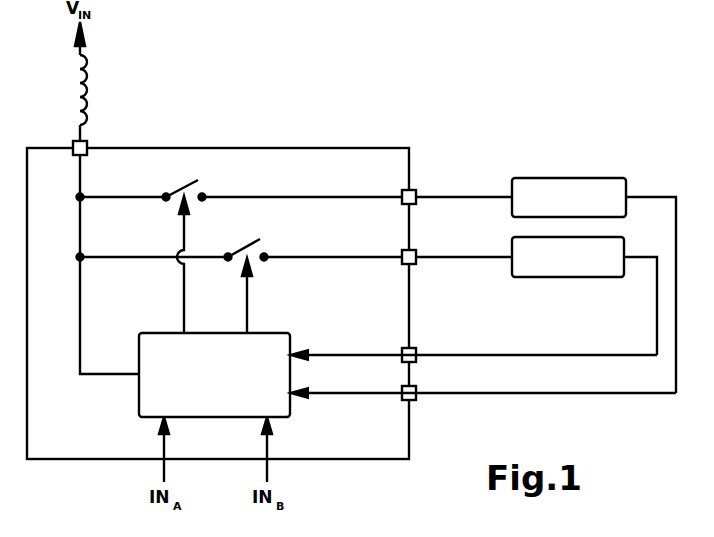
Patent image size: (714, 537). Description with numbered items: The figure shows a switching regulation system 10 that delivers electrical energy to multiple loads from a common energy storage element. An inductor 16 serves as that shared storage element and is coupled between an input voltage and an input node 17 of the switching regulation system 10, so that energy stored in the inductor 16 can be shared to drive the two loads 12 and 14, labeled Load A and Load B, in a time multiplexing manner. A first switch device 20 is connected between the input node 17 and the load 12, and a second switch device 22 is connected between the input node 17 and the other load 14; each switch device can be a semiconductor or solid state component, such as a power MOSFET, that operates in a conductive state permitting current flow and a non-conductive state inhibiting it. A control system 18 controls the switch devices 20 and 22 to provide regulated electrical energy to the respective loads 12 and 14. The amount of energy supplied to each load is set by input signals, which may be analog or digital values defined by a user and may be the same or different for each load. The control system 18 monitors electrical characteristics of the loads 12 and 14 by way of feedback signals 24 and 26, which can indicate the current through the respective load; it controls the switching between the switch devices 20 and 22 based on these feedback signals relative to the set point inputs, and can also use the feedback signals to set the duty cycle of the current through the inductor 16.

The switching regulation system 10 is at (372, 127).
The load 12 is at (560, 177).
The load 14 is at (546, 278).
The inductor 16 is at (72, 97).
The input node 17 is at (86, 142).
The control system 18 is at (160, 333).
The first switch device 20 is at (186, 186).
The second switch device 22 is at (256, 241).
The feedback signal 24 is at (333, 354).
The feedback signal 26 is at (330, 397).